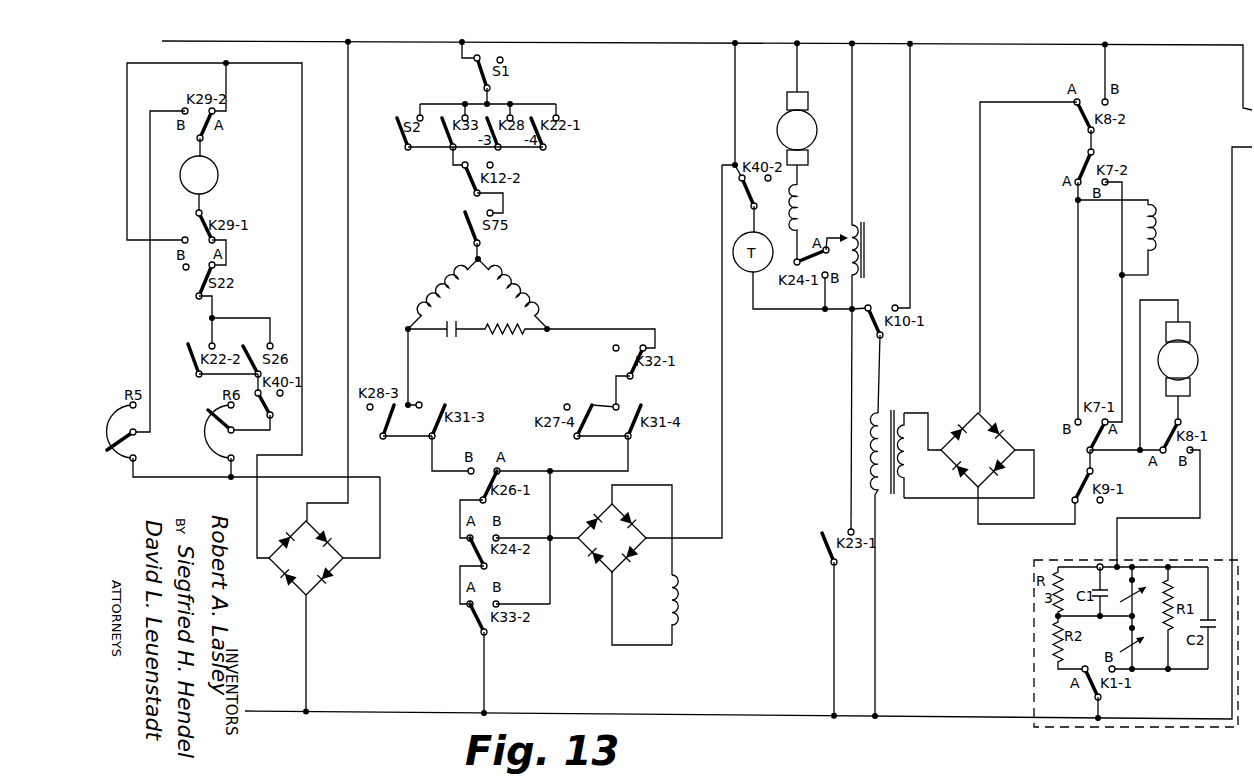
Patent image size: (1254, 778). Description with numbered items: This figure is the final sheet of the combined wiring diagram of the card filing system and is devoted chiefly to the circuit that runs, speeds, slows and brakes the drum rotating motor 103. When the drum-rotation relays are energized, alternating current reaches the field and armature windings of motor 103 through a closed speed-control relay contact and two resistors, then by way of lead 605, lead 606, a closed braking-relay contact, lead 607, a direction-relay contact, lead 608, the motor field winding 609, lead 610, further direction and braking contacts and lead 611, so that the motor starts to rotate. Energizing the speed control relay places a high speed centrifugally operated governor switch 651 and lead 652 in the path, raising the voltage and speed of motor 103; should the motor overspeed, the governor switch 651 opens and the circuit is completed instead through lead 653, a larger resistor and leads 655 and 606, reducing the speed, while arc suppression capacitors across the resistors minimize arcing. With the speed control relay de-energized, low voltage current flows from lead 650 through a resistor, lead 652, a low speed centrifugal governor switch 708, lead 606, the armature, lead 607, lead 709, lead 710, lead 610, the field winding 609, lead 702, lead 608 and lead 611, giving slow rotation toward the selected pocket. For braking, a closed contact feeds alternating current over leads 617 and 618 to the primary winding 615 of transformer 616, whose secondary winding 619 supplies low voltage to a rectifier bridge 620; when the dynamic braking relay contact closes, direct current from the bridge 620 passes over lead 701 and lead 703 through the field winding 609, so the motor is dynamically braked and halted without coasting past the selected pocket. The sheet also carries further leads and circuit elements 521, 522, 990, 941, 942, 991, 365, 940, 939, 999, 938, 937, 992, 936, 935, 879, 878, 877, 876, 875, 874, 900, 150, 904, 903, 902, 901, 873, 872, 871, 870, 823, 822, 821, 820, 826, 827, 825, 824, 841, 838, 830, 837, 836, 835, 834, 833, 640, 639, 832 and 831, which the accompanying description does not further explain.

The positive supply bus 521 is at (163, 42).
The return supply bus 522 is at (283, 711).
The conductor 990 is at (168, 63).
The conductor 941 is at (226, 82).
The conductor 942 is at (302, 130).
The conductor 991 is at (150, 290).
The indicator lamp 365 is at (199, 175).
The conductor 940 is at (226, 252).
The conductor 939 is at (212, 328).
The conductor 999 is at (250, 312).
The conductor 938 is at (220, 376).
The conductor 937 is at (252, 437).
The conductor 992 is at (176, 477).
The conductor 936 is at (380, 545).
The rectifier bridge 935 is at (306, 616).
The conductor 879 is at (462, 58).
The conductor 878 is at (525, 104).
The conductor 877 is at (525, 150).
The conductor 876 is at (453, 160).
The conductor 875 is at (503, 205).
The motor winding 874 is at (432, 290).
The motor winding 900 is at (525, 296).
The motor 150 is at (487, 311).
The conductor 904 is at (608, 328).
The conductor 903 is at (620, 390).
The conductor 902 is at (588, 471).
The conductor 901 is at (530, 471).
The conductor 873 is at (408, 362).
The conductor 872 is at (405, 440).
The conductor 871 is at (450, 476).
The conductor 870 is at (460, 520).
The conductor 823 is at (525, 535).
The conductor 822 is at (460, 590).
The conductor 821 is at (484, 672).
The rectifier bridge 820 is at (612, 538).
The conductor 826 is at (672, 490).
The relay coil 827 is at (680, 600).
The conductor 825 is at (612, 638).
The conductor 824 is at (722, 520).
The conductor 841 is at (734, 86).
The conductor 838 is at (797, 68).
The motor 830 is at (797, 138).
The relay coil 837 is at (797, 192).
The conductor 836 is at (797, 232).
The conductor 835 is at (828, 236).
The transformer winding 834 is at (867, 240).
The conductor 833 is at (862, 296).
The conductor 640 is at (765, 312).
The conductor 639 is at (838, 312).
The lead 618 is at (910, 190).
The conductor 832 is at (851, 442).
The transformer 616 is at (899, 416).
The primary winding 615 is at (874, 468).
The secondary winding 619 is at (910, 478).
The rectifier bridge 620 is at (969, 455).
The lead 701 is at (995, 524).
The conductor 831 is at (834, 642).
The lead 617 is at (875, 625).
The lead 611 is at (1105, 68).
The lead 703 is at (1030, 100).
The lead 610 is at (1112, 200).
The motor field winding 609 is at (1154, 232).
The lead 702 is at (1140, 277).
The lead 608 is at (1122, 310).
The lead 710 is at (1078, 316).
The lead 607 is at (1175, 300).
The drum rotating motor 103 is at (1178, 372).
The lead 709 is at (1125, 452).
The lead 606 is at (1150, 518).
The lead 605 is at (1072, 565).
The lead 655 is at (1145, 567).
The low speed centrifugal governor switch 708 is at (1142, 619).
The high speed centrifugally operated governor switch 651 is at (1141, 633).
The lead 652 is at (1126, 614).
The lead 653 is at (1150, 672).
The lead 650 is at (1096, 708).